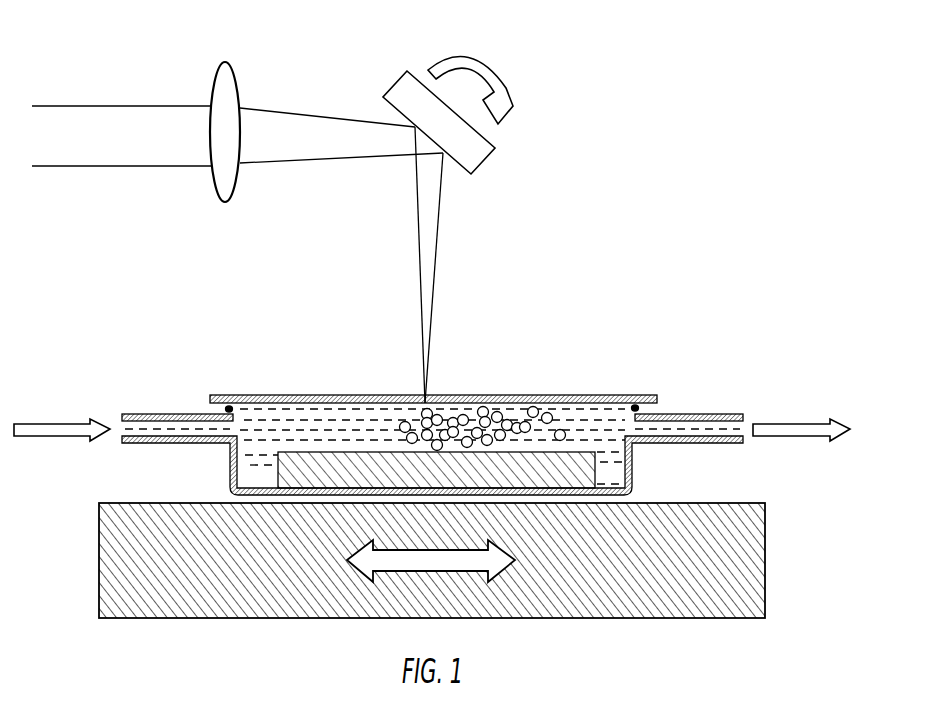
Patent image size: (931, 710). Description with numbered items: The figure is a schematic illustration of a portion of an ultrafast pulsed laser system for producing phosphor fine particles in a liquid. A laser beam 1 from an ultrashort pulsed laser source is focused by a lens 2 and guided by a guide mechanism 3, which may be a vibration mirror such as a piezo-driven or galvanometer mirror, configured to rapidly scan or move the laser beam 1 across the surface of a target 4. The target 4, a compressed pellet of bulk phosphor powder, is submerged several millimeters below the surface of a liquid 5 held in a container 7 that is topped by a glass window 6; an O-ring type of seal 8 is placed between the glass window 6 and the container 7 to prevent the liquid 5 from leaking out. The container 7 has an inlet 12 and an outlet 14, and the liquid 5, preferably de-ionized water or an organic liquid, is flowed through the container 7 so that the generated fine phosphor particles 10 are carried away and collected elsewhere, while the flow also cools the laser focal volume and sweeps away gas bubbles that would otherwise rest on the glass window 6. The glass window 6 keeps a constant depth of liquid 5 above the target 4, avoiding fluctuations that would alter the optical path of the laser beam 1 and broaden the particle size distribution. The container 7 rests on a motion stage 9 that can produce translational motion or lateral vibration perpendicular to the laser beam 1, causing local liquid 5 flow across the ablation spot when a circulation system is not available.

The laser beam 1 is at (140, 105).
The lens 2 is at (227, 63).
The guide mechanism 3 is at (488, 150).
The target 4 is at (317, 450).
The liquid 5 is at (587, 416).
The glass window 6 is at (638, 398).
The container 7 is at (632, 467).
The seal 8 is at (230, 408).
The motion stage 9 is at (97, 563).
The fine phosphor particles 10 is at (503, 420).
The inlet 12 is at (143, 415).
The outlet 14 is at (705, 413).